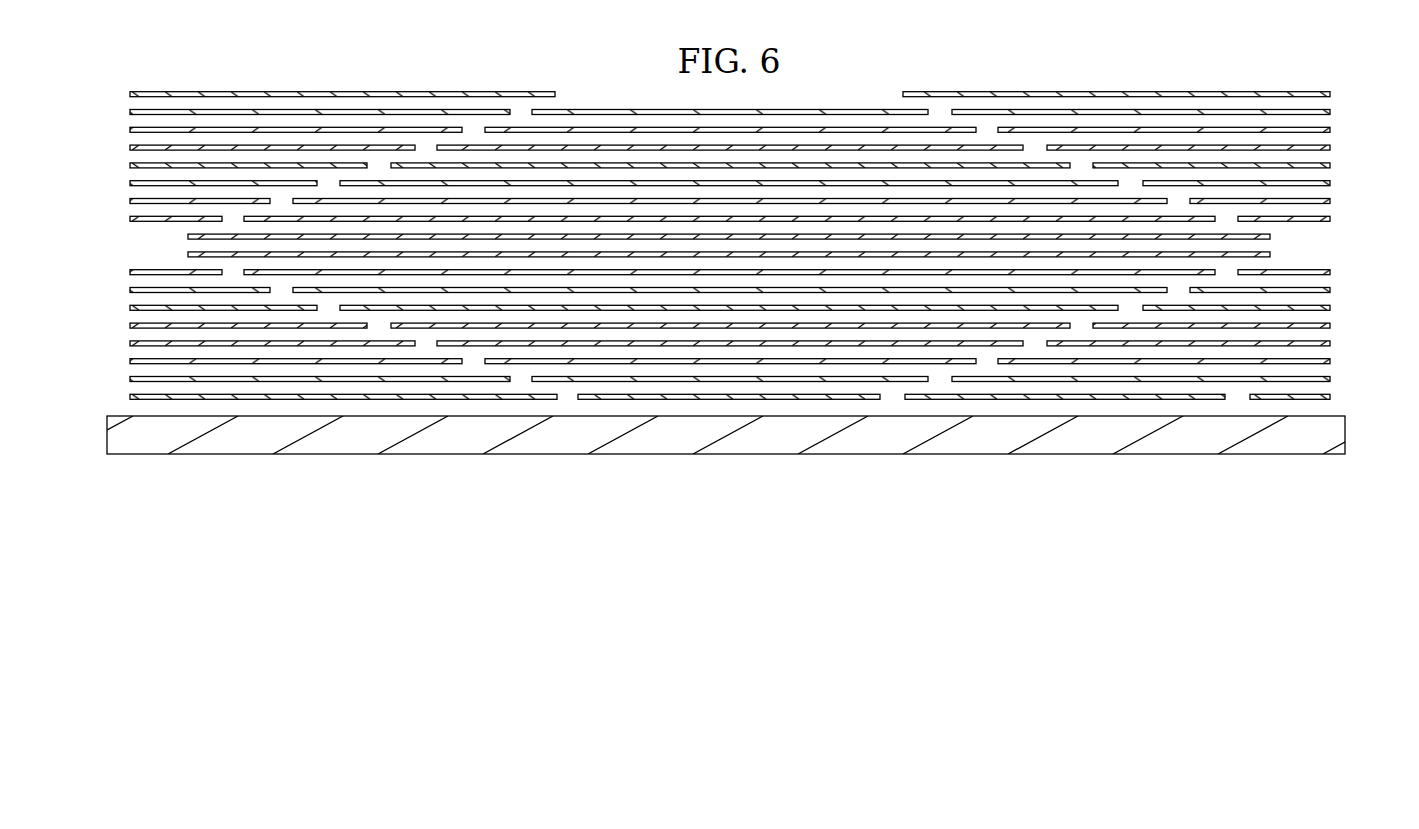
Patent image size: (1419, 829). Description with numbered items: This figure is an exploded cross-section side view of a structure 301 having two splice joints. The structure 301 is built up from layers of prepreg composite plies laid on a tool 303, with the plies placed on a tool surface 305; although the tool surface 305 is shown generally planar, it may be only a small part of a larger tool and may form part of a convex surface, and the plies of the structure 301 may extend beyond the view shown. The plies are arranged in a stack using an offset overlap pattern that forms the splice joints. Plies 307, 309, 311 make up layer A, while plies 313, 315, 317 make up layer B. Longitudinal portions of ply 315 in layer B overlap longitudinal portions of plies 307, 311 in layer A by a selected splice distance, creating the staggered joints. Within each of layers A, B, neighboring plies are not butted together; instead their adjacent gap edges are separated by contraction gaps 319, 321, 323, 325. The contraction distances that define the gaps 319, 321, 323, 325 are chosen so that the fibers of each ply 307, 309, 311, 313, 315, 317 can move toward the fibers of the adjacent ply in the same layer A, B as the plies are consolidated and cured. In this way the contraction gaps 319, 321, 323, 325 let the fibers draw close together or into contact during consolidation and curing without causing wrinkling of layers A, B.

The structure 301 is at (1335, 85).
The tool 303 is at (330, 458).
The tool surface 305 is at (1063, 418).
The ply 307 is at (1140, 403).
The ply 309 is at (695, 403).
The ply 311 is at (265, 404).
The ply 313 is at (1237, 384).
The ply 315 is at (780, 384).
The ply 317 is at (165, 386).
The contraction gap 319 is at (892, 399).
The contraction gap 321 is at (567, 399).
The contraction gap 323 is at (938, 379).
The contraction gap 325 is at (522, 379).
The layer A is at (110, 401).
The layer B is at (110, 374).